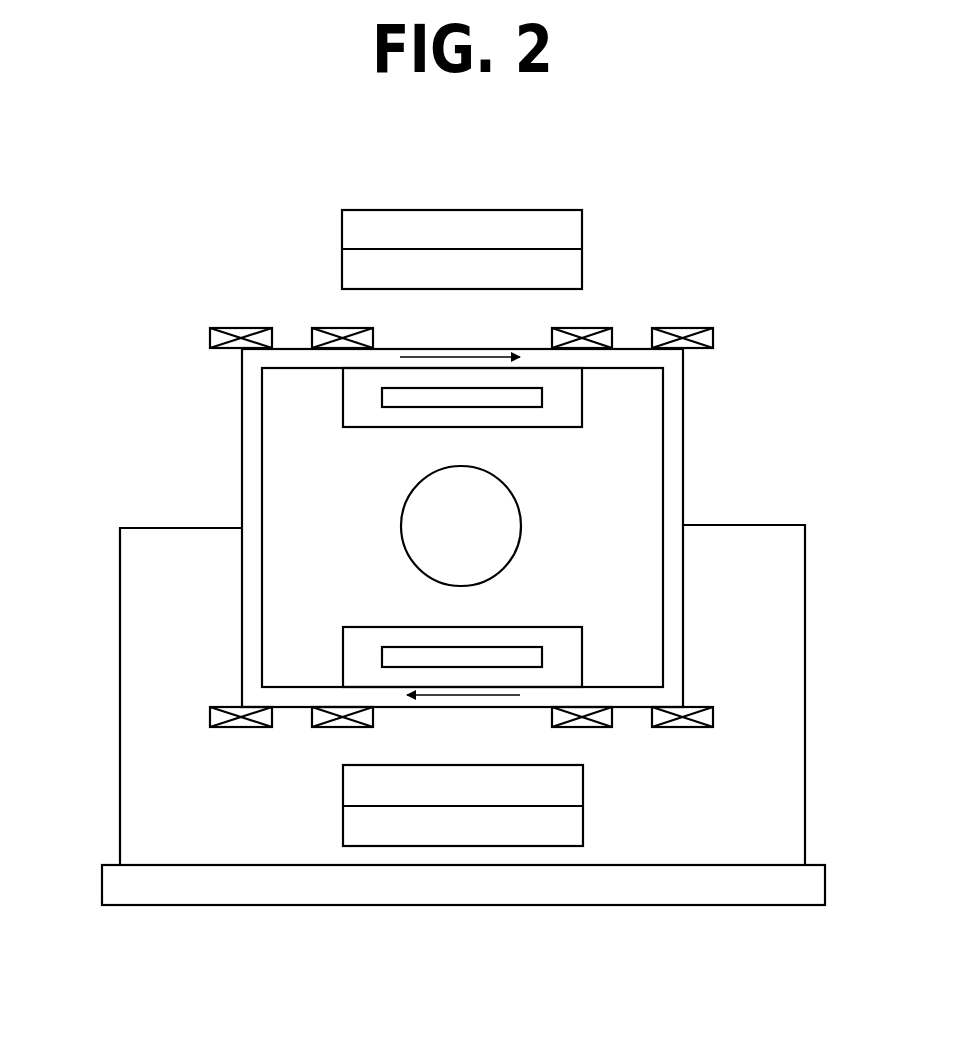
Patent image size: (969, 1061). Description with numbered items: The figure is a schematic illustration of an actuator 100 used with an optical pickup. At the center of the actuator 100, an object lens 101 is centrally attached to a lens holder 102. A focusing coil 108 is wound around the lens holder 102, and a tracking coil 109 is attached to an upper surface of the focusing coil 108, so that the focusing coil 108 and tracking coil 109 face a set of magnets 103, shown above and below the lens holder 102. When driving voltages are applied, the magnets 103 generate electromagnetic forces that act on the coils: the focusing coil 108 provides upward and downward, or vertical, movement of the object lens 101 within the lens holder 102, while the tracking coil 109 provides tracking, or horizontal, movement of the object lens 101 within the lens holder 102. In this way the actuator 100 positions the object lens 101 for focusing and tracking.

The actuator 100 is at (112, 168).
The object lens 101 is at (403, 513).
The lens holder 102 is at (620, 447).
The magnets 103 is at (342, 270).
The focusing coil 108 is at (680, 605).
The tracking coil 109 is at (227, 329).